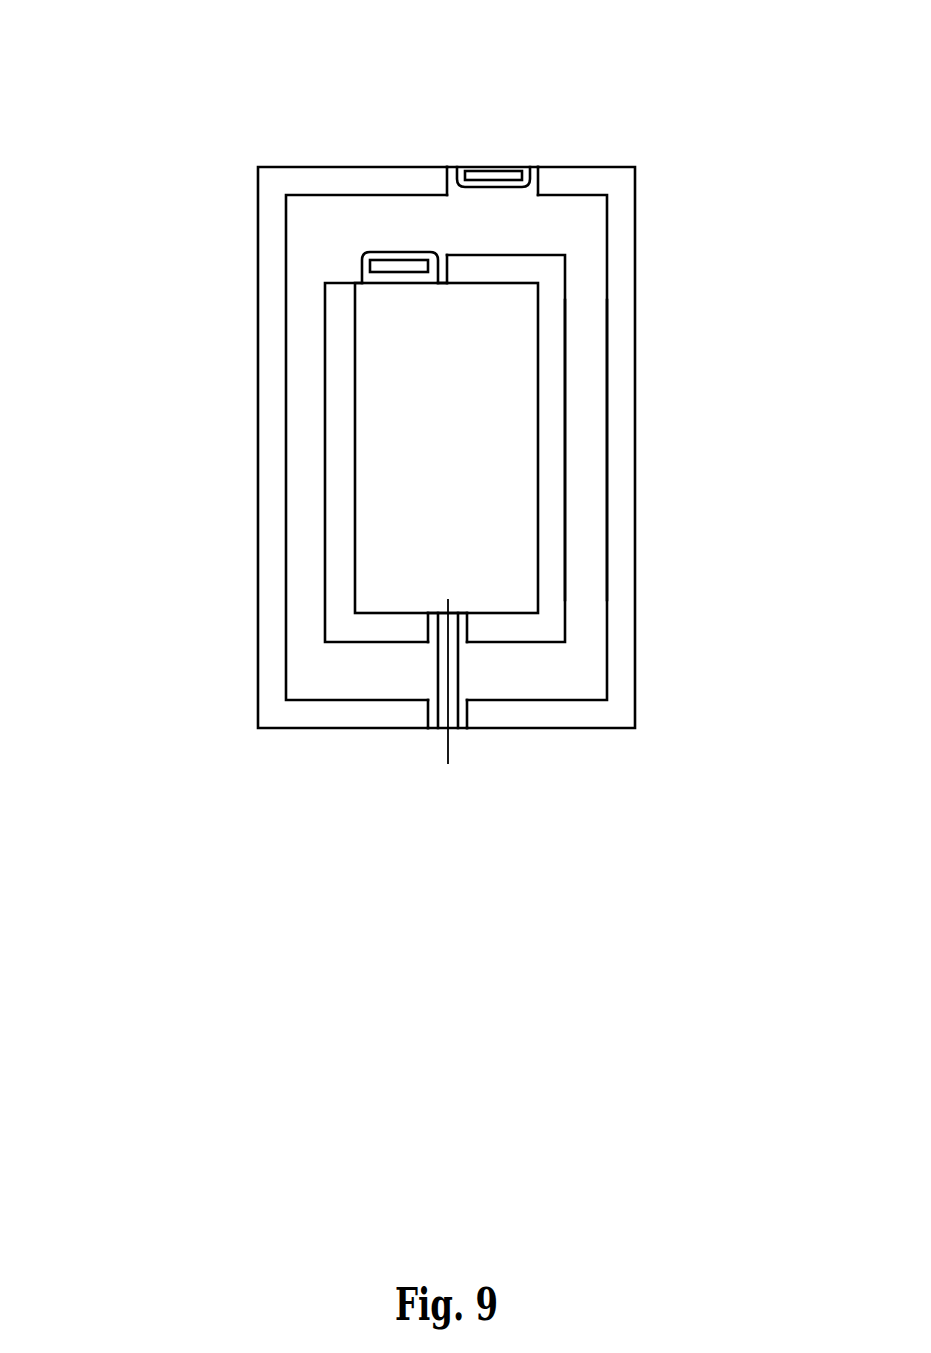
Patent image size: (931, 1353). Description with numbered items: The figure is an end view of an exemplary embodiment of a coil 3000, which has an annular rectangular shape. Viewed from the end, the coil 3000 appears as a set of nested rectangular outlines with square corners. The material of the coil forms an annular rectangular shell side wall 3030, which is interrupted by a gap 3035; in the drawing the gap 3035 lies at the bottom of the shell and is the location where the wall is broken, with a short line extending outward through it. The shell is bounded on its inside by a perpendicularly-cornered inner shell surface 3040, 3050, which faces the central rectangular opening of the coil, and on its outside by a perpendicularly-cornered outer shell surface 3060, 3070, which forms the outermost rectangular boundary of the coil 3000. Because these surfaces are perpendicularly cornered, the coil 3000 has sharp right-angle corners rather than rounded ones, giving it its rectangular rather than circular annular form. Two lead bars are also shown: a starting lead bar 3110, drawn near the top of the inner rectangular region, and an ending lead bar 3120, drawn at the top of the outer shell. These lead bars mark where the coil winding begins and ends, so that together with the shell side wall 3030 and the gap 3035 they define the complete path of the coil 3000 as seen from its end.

The coil 3000 is at (106, 56).
The annular rectangular shell side wall 3030 is at (596, 459).
The gap 3035 is at (450, 734).
The perpendicularly-cornered inner shell surface 3040 is at (560, 594).
The perpendicularly-cornered inner shell surface 3050 is at (336, 545).
The perpendicularly-cornered outer shell surface 3060 is at (629, 317).
The perpendicularly-cornered outer shell surface 3070 is at (262, 356).
The starting lead bar 3110 is at (380, 246).
The ending lead bar 3120 is at (504, 161).